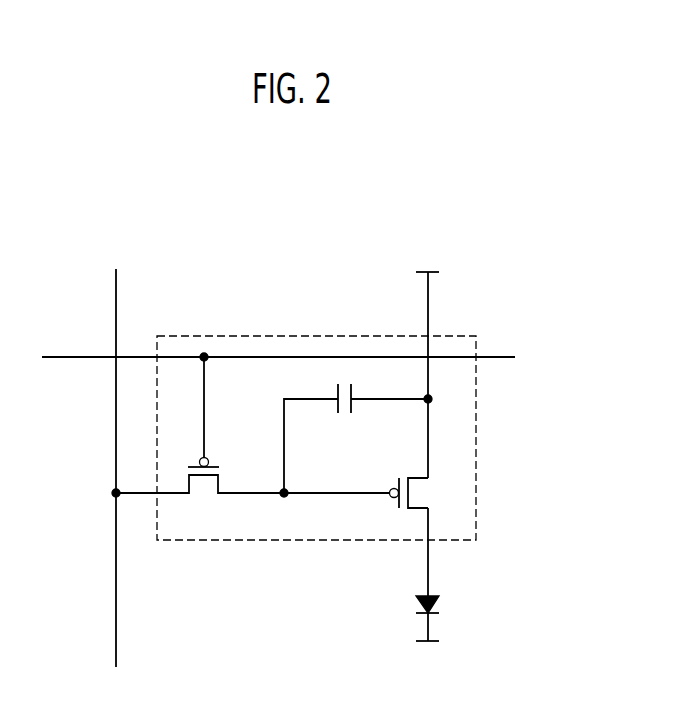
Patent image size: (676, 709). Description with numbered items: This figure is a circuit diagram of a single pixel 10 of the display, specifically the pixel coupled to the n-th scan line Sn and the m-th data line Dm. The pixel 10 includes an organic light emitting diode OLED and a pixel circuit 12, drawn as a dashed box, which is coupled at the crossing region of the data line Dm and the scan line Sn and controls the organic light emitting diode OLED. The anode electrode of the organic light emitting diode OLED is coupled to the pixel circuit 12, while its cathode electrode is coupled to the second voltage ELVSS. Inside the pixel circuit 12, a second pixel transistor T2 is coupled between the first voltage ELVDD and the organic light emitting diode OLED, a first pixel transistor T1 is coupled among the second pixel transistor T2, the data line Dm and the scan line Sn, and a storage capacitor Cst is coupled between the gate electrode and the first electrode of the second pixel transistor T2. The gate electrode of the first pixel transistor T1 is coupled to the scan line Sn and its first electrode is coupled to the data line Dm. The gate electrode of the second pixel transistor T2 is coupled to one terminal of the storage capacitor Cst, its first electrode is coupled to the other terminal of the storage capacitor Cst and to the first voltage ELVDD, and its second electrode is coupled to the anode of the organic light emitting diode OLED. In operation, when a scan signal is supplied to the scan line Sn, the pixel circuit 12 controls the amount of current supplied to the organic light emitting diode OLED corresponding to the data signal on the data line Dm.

The pixel 10 is at (213, 217).
The pixel circuit 12 is at (478, 410).
The data line Dm is at (118, 278).
The scan line Sn is at (57, 358).
The first voltage ELVDD is at (428, 361).
The second voltage ELVSS is at (426, 656).
The first pixel transistor T1 is at (200, 438).
The second pixel transistor T2 is at (366, 537).
The storage capacitor Cst is at (356, 438).
The organic light emitting diode OLED is at (401, 617).